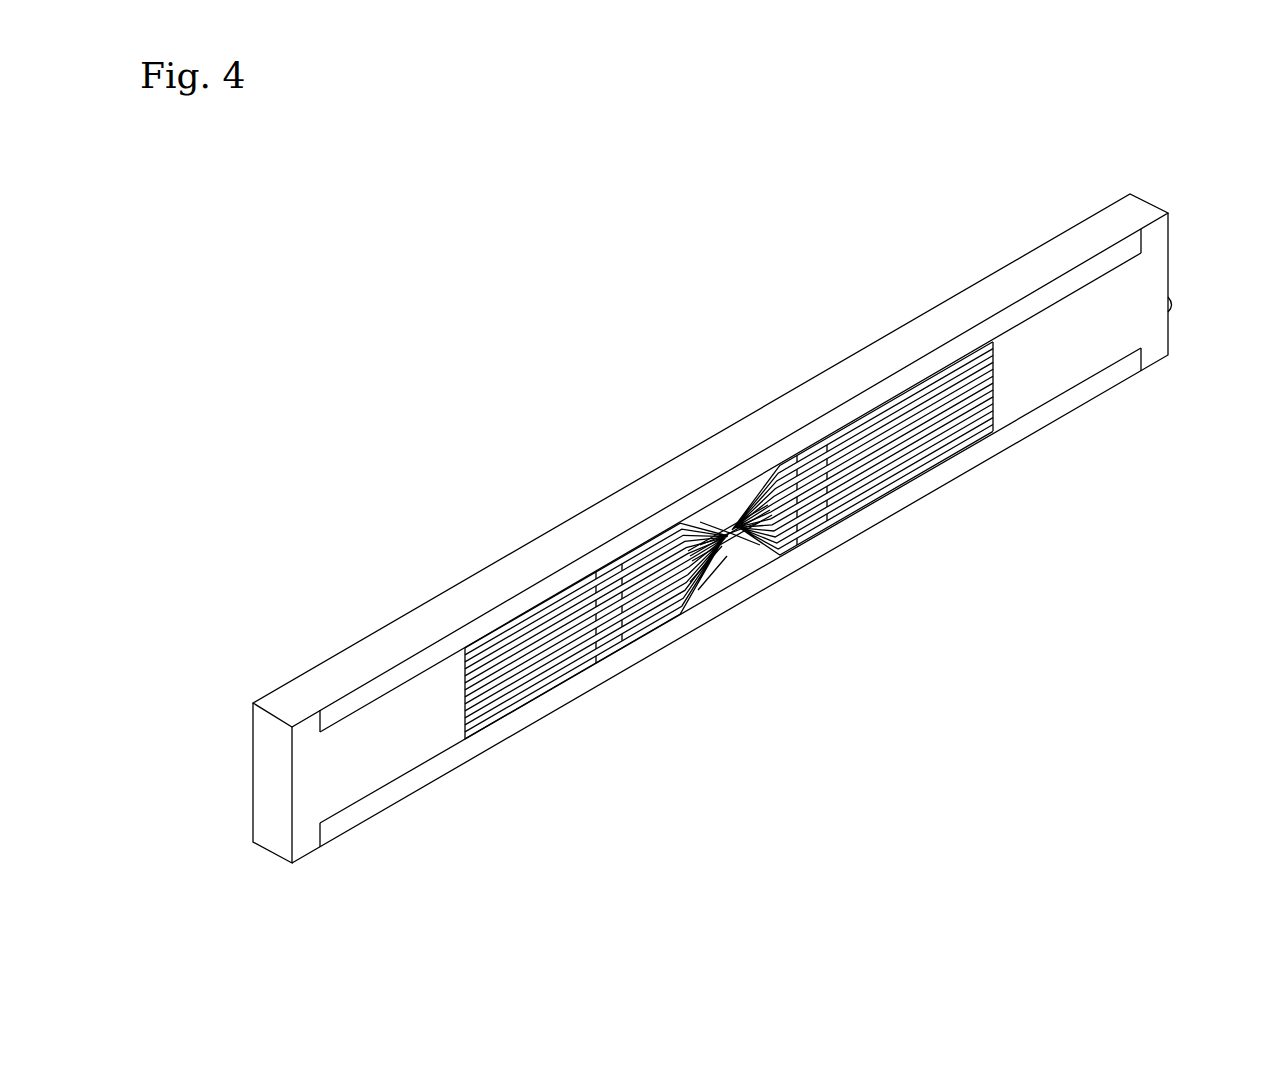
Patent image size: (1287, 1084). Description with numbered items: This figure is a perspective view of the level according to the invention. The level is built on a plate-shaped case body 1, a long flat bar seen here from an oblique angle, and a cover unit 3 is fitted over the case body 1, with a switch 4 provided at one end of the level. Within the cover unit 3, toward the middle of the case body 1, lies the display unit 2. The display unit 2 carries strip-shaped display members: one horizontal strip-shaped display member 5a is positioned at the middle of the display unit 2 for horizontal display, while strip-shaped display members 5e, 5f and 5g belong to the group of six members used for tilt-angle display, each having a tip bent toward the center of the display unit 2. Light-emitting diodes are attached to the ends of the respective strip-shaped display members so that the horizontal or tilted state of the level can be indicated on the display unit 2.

The plate-shaped case body 1 is at (441, 575).
The display unit 2 is at (735, 507).
The cover unit 3 is at (1152, 267).
The switch 4 is at (1173, 303).
The horizontal strip-shaped display member 5a is at (735, 556).
The strip-shaped display member 5e is at (653, 600).
The strip-shaped display member 5f is at (690, 597).
The strip-shaped display member 5g is at (705, 587).